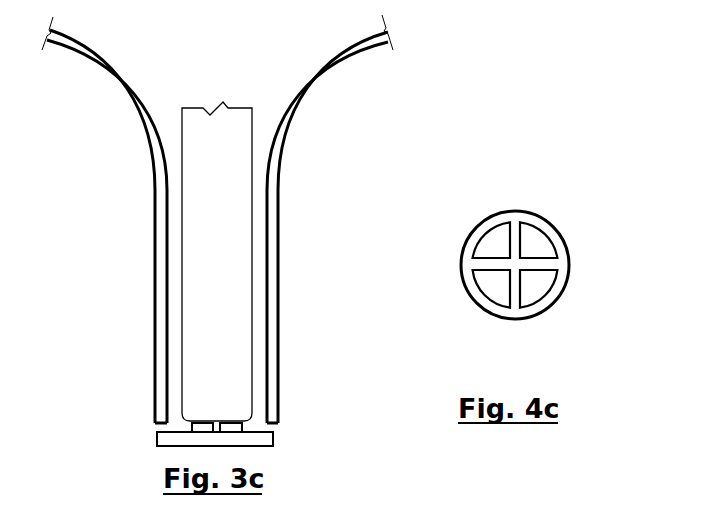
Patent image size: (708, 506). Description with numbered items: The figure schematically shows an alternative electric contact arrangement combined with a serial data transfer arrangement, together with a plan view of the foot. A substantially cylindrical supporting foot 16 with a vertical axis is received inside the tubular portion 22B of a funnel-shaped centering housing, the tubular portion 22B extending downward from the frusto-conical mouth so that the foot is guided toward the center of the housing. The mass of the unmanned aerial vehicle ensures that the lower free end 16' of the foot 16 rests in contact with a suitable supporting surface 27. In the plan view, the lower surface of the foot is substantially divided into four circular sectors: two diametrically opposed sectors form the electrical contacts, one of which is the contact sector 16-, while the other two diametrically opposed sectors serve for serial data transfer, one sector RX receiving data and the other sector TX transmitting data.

In FIG. 3c, the tubular portion 22B is at (153, 233).
In FIG. 3c, the supporting foot 16 is at (155, 261).
In FIG. 3c, the lower free end 16' is at (156, 432).
In FIG. 4c, the lower free end 16' is at (515, 223).
In FIG. 3c, the supporting surface 27 is at (273, 440).
In FIG. 4c, the receiving data sector RX is at (487, 242).
In FIG. 4c, the transmitting data sector TX is at (542, 287).
In FIG. 4c, the electrical contact sector 16- is at (487, 287).